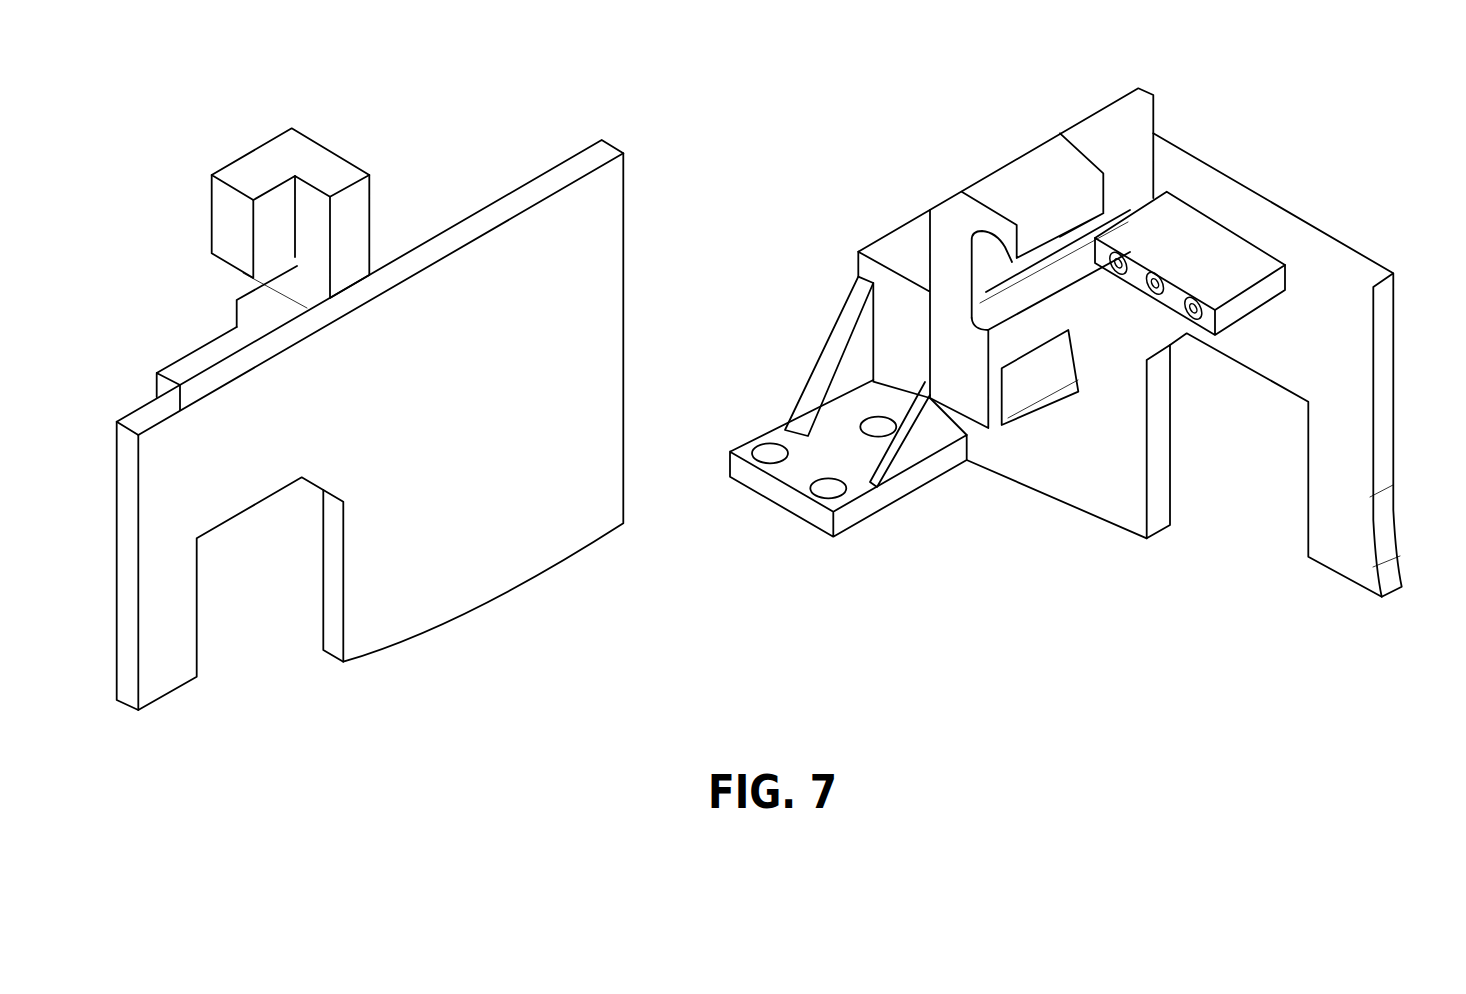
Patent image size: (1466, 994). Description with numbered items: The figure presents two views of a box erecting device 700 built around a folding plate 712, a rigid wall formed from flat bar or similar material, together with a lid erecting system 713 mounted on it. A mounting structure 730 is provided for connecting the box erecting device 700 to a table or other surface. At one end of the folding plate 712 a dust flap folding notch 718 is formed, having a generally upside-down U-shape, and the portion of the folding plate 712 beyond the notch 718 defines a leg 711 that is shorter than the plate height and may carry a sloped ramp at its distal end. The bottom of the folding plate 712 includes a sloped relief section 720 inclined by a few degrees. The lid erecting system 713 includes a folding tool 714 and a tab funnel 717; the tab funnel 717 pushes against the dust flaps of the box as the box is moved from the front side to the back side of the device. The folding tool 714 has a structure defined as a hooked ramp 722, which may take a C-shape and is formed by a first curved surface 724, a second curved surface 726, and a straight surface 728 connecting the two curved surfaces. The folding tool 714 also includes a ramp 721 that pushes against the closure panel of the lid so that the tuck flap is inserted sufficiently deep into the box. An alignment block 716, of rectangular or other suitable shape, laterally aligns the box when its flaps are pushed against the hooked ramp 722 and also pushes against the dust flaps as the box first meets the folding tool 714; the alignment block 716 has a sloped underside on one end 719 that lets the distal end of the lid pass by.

The box erecting device 700 is at (176, 146).
The leg 711 is at (150, 640).
The folding plate 712 is at (617, 290).
The lid erecting system 713 is at (306, 112).
The folding tool 714 is at (215, 212).
The alignment block 716 is at (200, 348).
The tab funnel 717 is at (1030, 395).
The dust flap folding notch 718 is at (326, 597).
The sloped underside end 719 is at (1097, 268).
The sloped relief section 720 is at (365, 650).
The ramp 721 is at (290, 258).
The hooked ramp 722 is at (1085, 212).
The first curved surface 724 is at (983, 275).
The second curved surface 726 is at (1045, 250).
The straight surface 728 is at (948, 240).
The mounting structure 730 is at (810, 435).